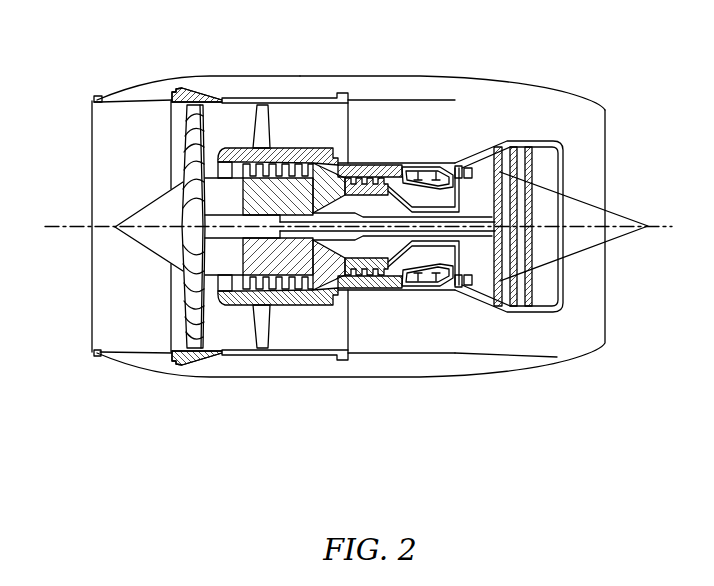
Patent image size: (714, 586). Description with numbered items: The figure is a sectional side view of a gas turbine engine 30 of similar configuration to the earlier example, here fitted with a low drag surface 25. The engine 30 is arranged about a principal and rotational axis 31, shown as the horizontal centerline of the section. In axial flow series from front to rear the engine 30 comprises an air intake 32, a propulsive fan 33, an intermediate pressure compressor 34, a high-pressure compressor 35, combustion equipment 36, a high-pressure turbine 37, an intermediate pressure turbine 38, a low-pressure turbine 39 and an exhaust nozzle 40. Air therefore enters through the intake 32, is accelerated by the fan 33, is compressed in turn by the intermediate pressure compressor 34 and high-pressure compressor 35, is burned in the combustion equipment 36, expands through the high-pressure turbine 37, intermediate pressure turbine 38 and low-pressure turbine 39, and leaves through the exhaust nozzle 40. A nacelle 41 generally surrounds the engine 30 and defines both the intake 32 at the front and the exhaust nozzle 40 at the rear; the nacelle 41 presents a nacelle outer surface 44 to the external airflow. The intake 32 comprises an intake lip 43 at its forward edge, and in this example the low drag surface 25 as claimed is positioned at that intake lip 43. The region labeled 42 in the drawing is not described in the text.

The low drag surface 25 is at (95, 96).
The gas turbine engine 30 is at (81, 147).
The principal and rotational axis 31 is at (60, 225).
The air intake 32 is at (125, 103).
The propulsive fan 33 is at (180, 312).
The intermediate pressure compressor 34 is at (277, 292).
The high-pressure compressor 35 is at (361, 178).
The combustion equipment 36 is at (428, 280).
The high-pressure turbine 37 is at (452, 290).
The intermediate pressure turbine 38 is at (457, 164).
The low-pressure turbine 39 is at (495, 311).
The exhaust nozzle 40 is at (607, 337).
The nacelle 41 is at (532, 92).
The bypass duct 42 is at (290, 132).
The intake lip 43 is at (94, 100).
The nacelle outer surface 44 is at (127, 85).